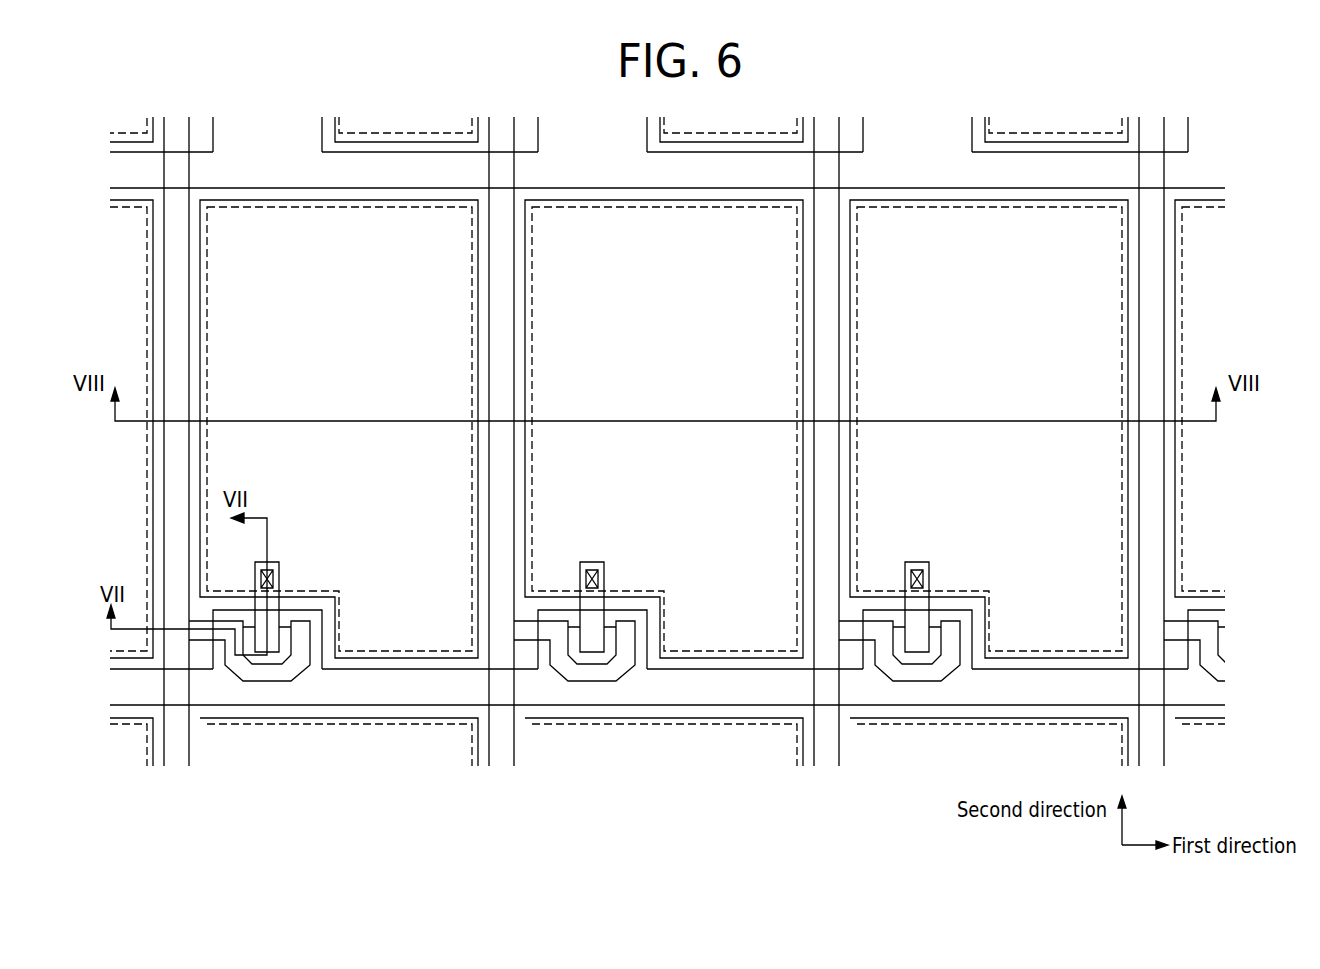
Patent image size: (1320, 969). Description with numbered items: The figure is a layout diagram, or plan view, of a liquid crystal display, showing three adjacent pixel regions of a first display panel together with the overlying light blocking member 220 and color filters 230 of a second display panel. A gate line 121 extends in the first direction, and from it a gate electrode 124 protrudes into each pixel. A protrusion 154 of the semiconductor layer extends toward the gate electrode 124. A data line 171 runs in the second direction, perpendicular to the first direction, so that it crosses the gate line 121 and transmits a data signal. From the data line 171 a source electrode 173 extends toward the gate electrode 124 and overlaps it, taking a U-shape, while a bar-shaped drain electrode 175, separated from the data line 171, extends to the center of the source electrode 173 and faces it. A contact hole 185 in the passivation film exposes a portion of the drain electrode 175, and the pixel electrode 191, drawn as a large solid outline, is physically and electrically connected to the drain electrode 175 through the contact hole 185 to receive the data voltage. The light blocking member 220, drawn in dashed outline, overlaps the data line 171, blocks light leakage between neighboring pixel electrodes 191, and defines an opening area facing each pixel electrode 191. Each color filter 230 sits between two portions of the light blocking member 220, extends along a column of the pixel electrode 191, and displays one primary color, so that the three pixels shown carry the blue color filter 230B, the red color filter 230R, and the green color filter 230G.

The gate line 121 is at (453, 706).
The gate electrode 124 is at (322, 640).
The protrusion 154 is at (308, 621).
The data line 171 is at (188, 337).
The source electrode 173 is at (262, 682).
The drain electrode 175 is at (284, 627).
The contact hole 185 is at (273, 568).
The pixel electrode 191 is at (200, 298).
The light blocking member 220 is at (472, 295).
The color filter 230 is at (650, 780).
The red color filter 230R is at (665, 339).
The green color filter 230G is at (989, 339).
The blue color filter 230B is at (340, 339).